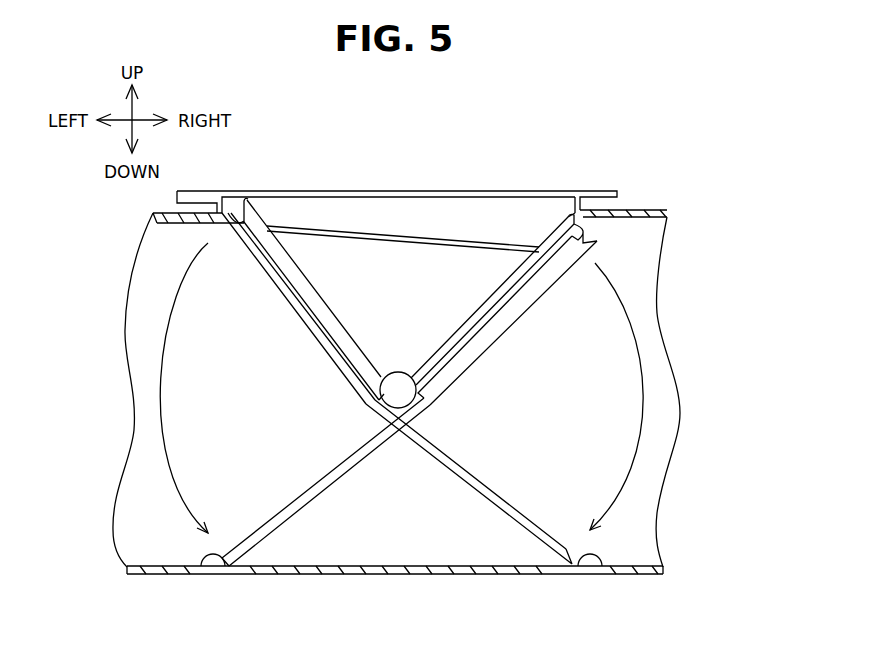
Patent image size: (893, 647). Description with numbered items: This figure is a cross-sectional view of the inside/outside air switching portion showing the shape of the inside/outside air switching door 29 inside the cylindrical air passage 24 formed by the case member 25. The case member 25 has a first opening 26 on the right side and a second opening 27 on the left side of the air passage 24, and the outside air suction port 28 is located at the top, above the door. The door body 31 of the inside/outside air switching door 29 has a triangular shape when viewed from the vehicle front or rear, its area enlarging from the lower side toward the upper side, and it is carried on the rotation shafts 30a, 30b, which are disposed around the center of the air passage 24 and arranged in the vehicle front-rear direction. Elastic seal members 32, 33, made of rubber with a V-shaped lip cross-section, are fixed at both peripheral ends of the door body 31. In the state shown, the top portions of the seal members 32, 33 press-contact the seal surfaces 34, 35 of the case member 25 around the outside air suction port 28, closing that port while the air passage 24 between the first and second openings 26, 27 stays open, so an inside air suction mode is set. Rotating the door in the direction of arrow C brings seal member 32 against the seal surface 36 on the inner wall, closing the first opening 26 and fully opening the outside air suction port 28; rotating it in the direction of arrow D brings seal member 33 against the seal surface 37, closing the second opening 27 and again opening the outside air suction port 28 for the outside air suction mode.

The air passage 24 is at (330, 528).
The case member 25 is at (640, 205).
The first opening 26 is at (655, 378).
The second opening 27 is at (147, 338).
The outside air suction port 28 is at (515, 203).
The inside/outside air switching door 29 is at (441, 229).
The rotation shaft 30a is at (407, 397).
The rotation shaft 30b is at (469, 482).
The door body 31 is at (404, 262).
The elastic seal member 32 is at (523, 318).
The elastic seal member 33 is at (268, 268).
The seal surface 34 is at (571, 207).
The seal surface 35 is at (222, 222).
The seal surface 36 is at (596, 573).
The seal surface 37 is at (201, 571).
The arrow C is at (616, 492).
The arrow D is at (168, 458).